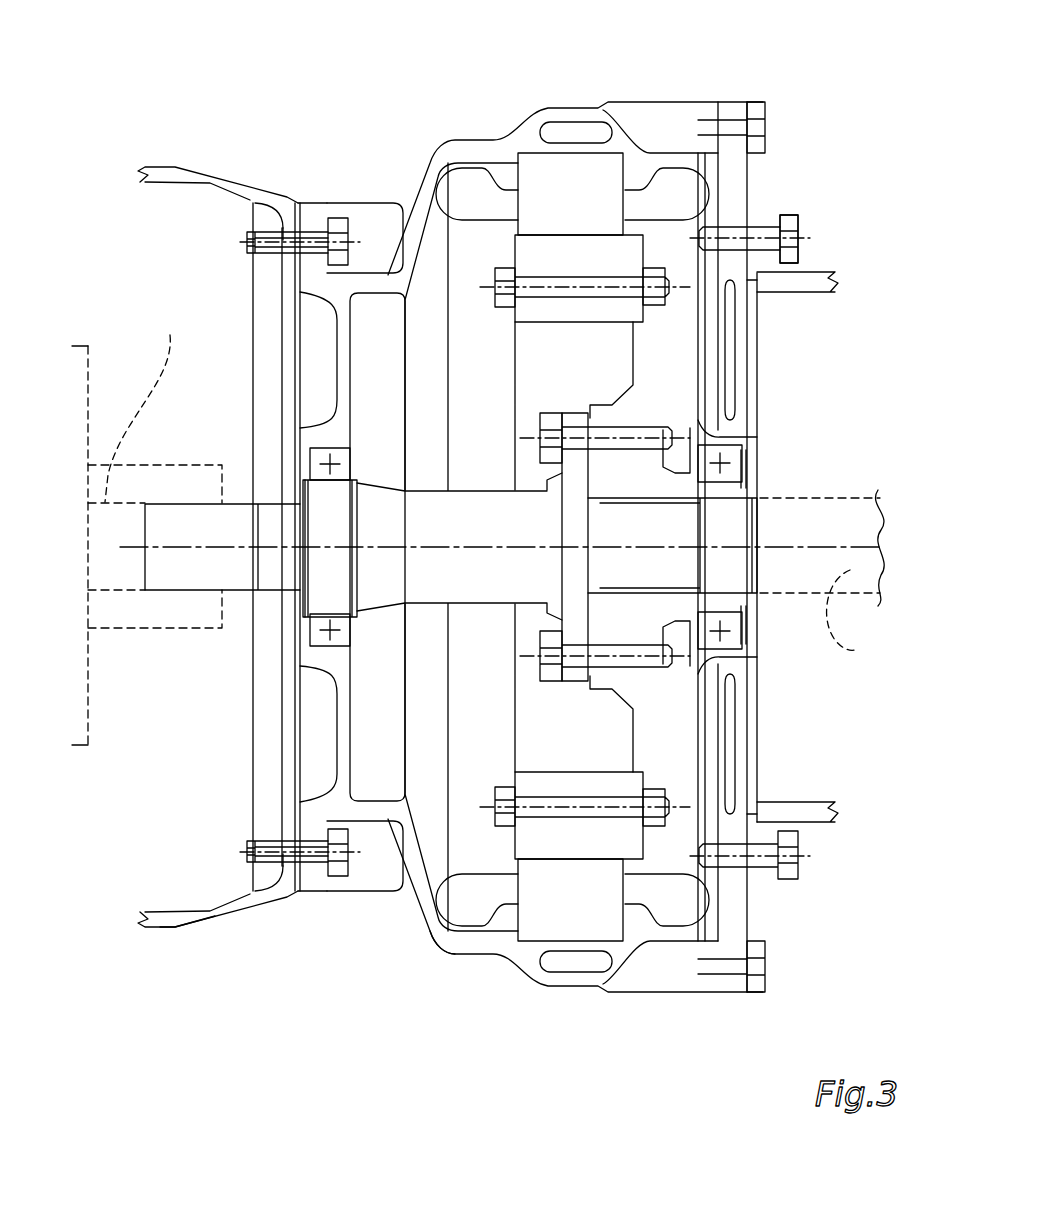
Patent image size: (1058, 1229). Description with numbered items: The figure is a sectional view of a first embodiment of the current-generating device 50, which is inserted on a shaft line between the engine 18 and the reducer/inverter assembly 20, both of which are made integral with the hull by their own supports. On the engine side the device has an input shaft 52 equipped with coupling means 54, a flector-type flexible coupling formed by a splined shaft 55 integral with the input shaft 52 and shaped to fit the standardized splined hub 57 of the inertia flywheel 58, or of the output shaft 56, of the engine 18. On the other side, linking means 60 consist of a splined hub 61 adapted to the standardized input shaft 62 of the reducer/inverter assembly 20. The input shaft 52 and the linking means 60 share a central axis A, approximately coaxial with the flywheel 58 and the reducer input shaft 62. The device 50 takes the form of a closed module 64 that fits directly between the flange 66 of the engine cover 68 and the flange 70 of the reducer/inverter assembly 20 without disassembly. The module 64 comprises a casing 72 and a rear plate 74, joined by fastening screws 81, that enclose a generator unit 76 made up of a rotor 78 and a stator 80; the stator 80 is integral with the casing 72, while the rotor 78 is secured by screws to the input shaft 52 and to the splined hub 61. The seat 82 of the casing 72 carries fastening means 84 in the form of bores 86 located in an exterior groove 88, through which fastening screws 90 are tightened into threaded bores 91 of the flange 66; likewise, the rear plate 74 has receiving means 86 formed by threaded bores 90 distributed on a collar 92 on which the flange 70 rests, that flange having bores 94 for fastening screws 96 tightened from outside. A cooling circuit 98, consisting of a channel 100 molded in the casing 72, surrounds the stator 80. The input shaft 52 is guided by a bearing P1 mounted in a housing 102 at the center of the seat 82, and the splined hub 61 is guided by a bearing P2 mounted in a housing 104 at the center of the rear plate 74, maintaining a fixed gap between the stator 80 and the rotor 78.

The engine 18 is at (195, 192).
The reducer/inverter assembly 20 is at (824, 281).
The current-generating device 50 is at (449, 970).
The input shaft 52 is at (432, 580).
The coupling means 54 is at (184, 442).
The splined shaft 55 is at (236, 520).
The output shaft 56 is at (197, 615).
The splined hub 57 is at (143, 405).
The inertia flywheel 58 is at (82, 672).
The linking means 60 is at (763, 489).
The splined hub 61 is at (663, 594).
The input shaft 62 is at (855, 648).
The closed module 64 is at (483, 139).
The flange 66 is at (298, 880).
The engine cover 68 is at (203, 920).
The flange 70 is at (773, 810).
The casing 72 is at (432, 158).
The rear plate 74 is at (722, 370).
The generator unit 76 is at (633, 922).
The rotor 78 is at (560, 255).
The stator 80 is at (533, 958).
The fastening screws 81 is at (765, 133).
The seat 82 is at (420, 830).
The fastening means 84 is at (313, 212).
The bores 86 is at (316, 224).
The exterior groove 88 is at (372, 215).
The fastening screws 90 is at (745, 225).
The bores 91 is at (300, 205).
The collar 92 is at (770, 885).
The bores 94 is at (768, 838).
The fastening screws 96 is at (795, 240).
The cooling circuit 98 is at (575, 130).
The channel 100 is at (585, 968).
The housing 102 is at (325, 645).
The housing 104 is at (730, 447).
The bearing P1 is at (310, 622).
The bearing P2 is at (752, 462).
The central axis A is at (908, 507).